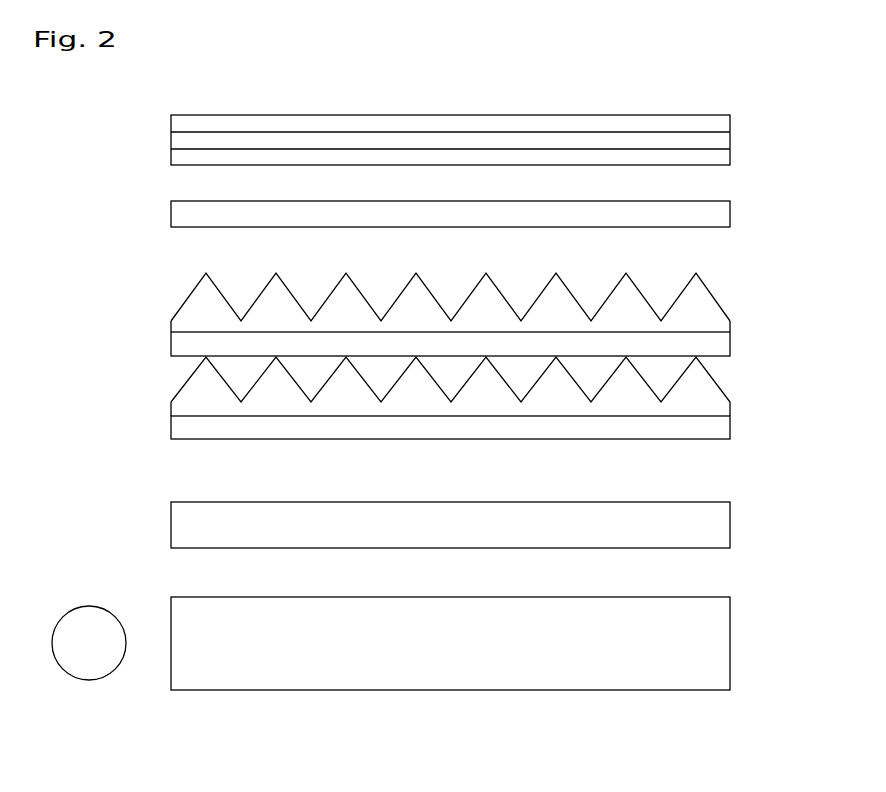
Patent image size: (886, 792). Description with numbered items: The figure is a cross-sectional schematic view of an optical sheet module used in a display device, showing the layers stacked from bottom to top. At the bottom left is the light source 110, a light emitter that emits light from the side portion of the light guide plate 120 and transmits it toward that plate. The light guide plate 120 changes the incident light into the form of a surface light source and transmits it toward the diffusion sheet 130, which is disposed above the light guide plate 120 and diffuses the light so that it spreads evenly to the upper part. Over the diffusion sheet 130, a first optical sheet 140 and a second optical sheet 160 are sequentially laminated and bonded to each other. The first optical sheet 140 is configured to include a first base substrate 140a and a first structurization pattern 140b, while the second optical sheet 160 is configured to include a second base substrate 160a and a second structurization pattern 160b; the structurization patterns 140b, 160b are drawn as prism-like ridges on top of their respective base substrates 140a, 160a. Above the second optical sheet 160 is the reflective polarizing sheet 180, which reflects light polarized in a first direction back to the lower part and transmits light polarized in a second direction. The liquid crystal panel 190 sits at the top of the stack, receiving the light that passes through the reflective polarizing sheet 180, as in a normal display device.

The light source 110 is at (88, 681).
The light guide plate 120 is at (730, 642).
The diffusion sheet 130 is at (730, 522).
The first optical sheet 140 is at (465, 398).
The first base substrate 140a is at (187, 426).
The first structurization pattern 140b is at (198, 390).
The second optical sheet 160 is at (465, 315).
The second base substrate 160a is at (187, 344).
The second structurization pattern 160b is at (198, 308).
The reflective polarizing sheet 180 is at (730, 213).
The liquid crystal panel 190 is at (730, 140).